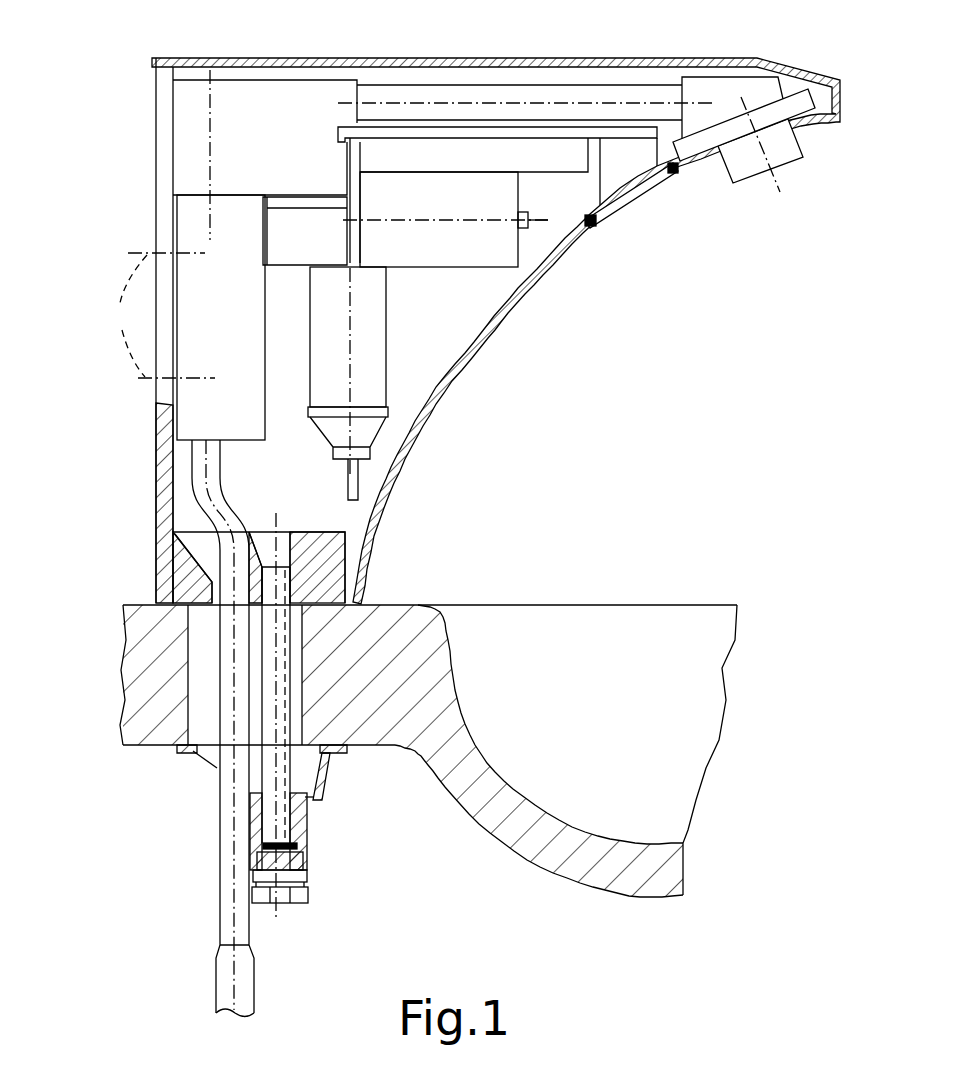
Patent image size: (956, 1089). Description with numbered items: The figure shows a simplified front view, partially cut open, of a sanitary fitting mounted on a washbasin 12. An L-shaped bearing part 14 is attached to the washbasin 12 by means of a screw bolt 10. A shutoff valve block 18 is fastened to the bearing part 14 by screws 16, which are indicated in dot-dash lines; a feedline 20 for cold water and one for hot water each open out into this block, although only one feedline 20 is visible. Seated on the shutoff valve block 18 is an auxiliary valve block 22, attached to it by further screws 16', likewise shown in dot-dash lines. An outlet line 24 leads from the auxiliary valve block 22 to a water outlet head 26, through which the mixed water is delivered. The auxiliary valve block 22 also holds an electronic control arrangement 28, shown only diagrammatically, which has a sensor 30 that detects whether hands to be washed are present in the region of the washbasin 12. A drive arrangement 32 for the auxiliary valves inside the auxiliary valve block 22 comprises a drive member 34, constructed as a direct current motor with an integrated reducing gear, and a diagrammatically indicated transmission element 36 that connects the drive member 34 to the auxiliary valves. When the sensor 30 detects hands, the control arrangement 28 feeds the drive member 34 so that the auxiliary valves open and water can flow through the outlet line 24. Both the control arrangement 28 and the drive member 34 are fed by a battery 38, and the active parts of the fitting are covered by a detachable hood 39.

The screw bolt 10 is at (285, 810).
The washbasin 12 is at (535, 863).
The bearing part 14 is at (160, 497).
The screws 16 is at (156, 315).
The screws 16' is at (157, 155).
The shutoff valve block 18 is at (230, 342).
The feedline 20 is at (228, 832).
The auxiliary valve block 22 is at (288, 152).
The outlet line 24 is at (513, 93).
The water outlet head 26 is at (787, 147).
The electronic control arrangement 28 is at (567, 182).
The sensor 30 is at (633, 165).
The drive arrangement 32 is at (393, 299).
The drive member 34 is at (380, 350).
The transmission element 36 is at (315, 253).
The battery 38 is at (472, 261).
The detachable hood 39 is at (372, 60).